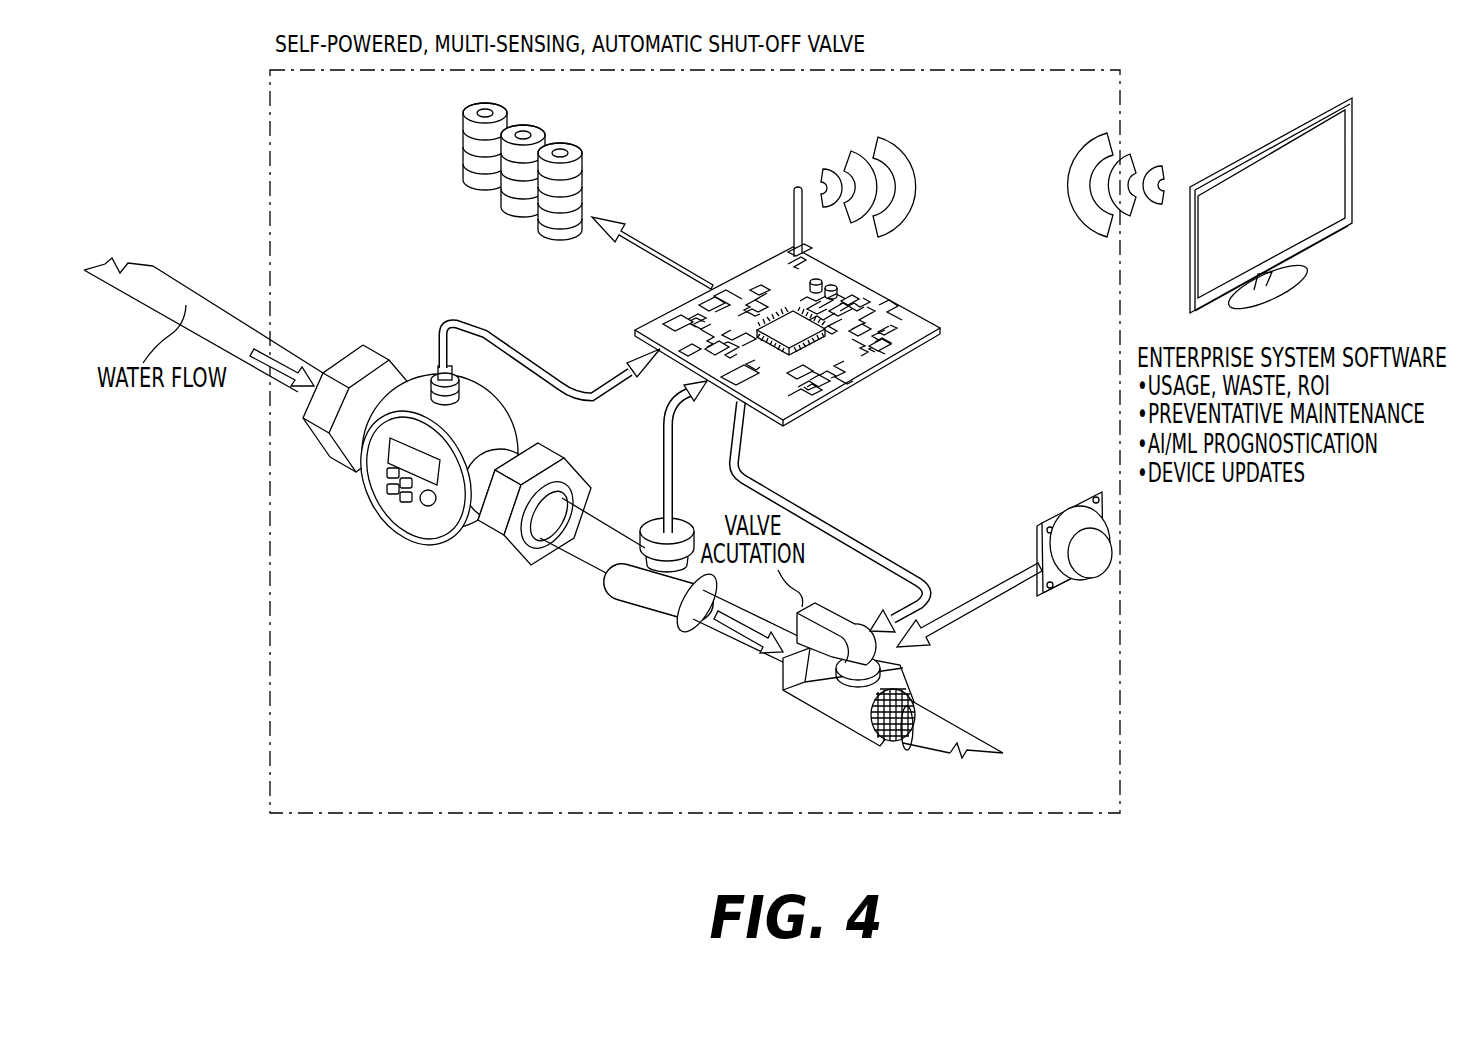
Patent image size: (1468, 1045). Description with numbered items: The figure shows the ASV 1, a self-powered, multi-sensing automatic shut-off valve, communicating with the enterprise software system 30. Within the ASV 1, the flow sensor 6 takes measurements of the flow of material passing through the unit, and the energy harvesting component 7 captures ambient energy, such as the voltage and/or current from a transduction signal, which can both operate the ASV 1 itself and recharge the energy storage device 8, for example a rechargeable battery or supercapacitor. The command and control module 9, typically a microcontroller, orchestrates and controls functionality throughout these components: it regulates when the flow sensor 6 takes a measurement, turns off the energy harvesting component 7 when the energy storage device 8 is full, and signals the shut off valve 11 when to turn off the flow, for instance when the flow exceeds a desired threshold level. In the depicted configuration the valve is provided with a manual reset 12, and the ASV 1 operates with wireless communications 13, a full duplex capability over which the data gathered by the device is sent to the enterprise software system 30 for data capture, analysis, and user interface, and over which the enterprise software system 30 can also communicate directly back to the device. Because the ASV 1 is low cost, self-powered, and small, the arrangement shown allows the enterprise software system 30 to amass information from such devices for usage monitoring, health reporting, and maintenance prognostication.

The ASV 1 is at (270, 82).
The flow sensor 6 is at (397, 522).
The energy harvesting component 7 is at (700, 650).
The energy storage device 8 is at (462, 148).
The command and control module 9 is at (882, 370).
The shut off valve 11 is at (838, 715).
The manual reset 12 is at (1044, 594).
The wireless communications 13 is at (917, 180).
The enterprise software system 30 is at (1282, 128).